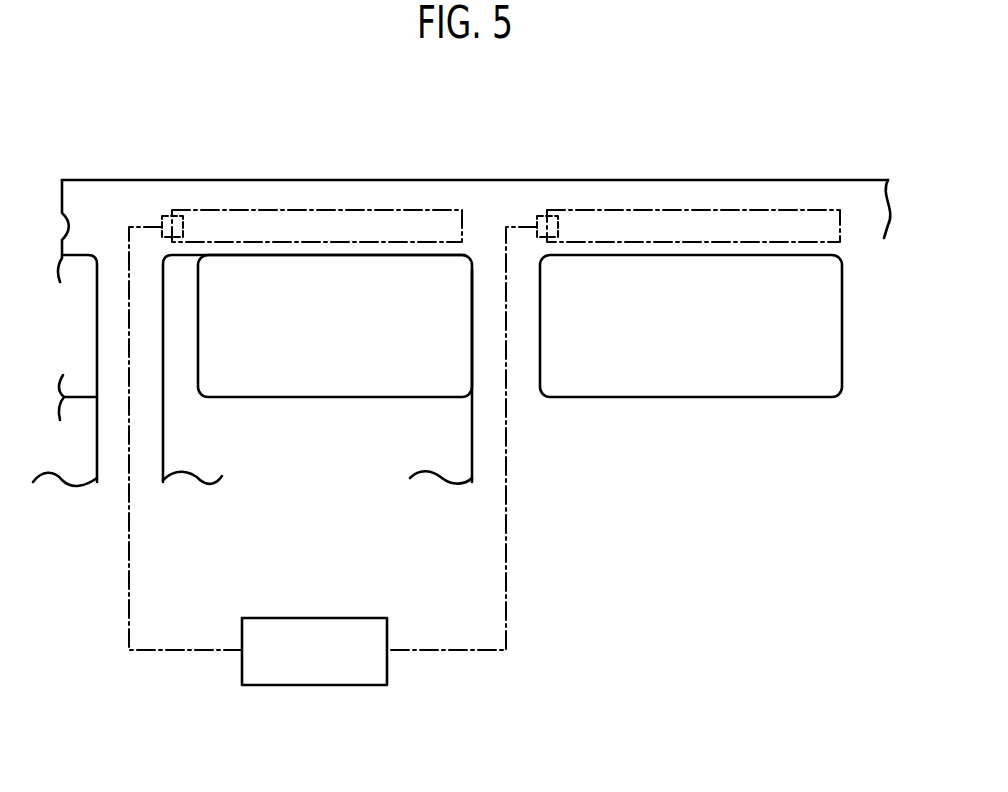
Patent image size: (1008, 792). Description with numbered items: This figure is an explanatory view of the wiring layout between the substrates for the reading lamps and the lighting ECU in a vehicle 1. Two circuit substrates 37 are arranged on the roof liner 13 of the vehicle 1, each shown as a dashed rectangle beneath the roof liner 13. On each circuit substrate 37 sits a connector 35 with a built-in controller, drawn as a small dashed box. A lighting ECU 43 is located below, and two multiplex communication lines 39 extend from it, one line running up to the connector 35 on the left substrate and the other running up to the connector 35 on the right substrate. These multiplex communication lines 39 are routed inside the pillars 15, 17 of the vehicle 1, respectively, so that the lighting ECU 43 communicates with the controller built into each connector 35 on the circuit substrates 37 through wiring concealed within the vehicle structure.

The vehicle 1 is at (699, 590).
The roof liner 13 is at (490, 205).
The pillar 15 is at (187, 331).
The pillar 17 is at (528, 331).
The connector 35 is at (162, 214).
The circuit substrate 37 is at (284, 222).
The multiplex communication line 39 is at (129, 577).
The lighting ECU 43 is at (315, 617).